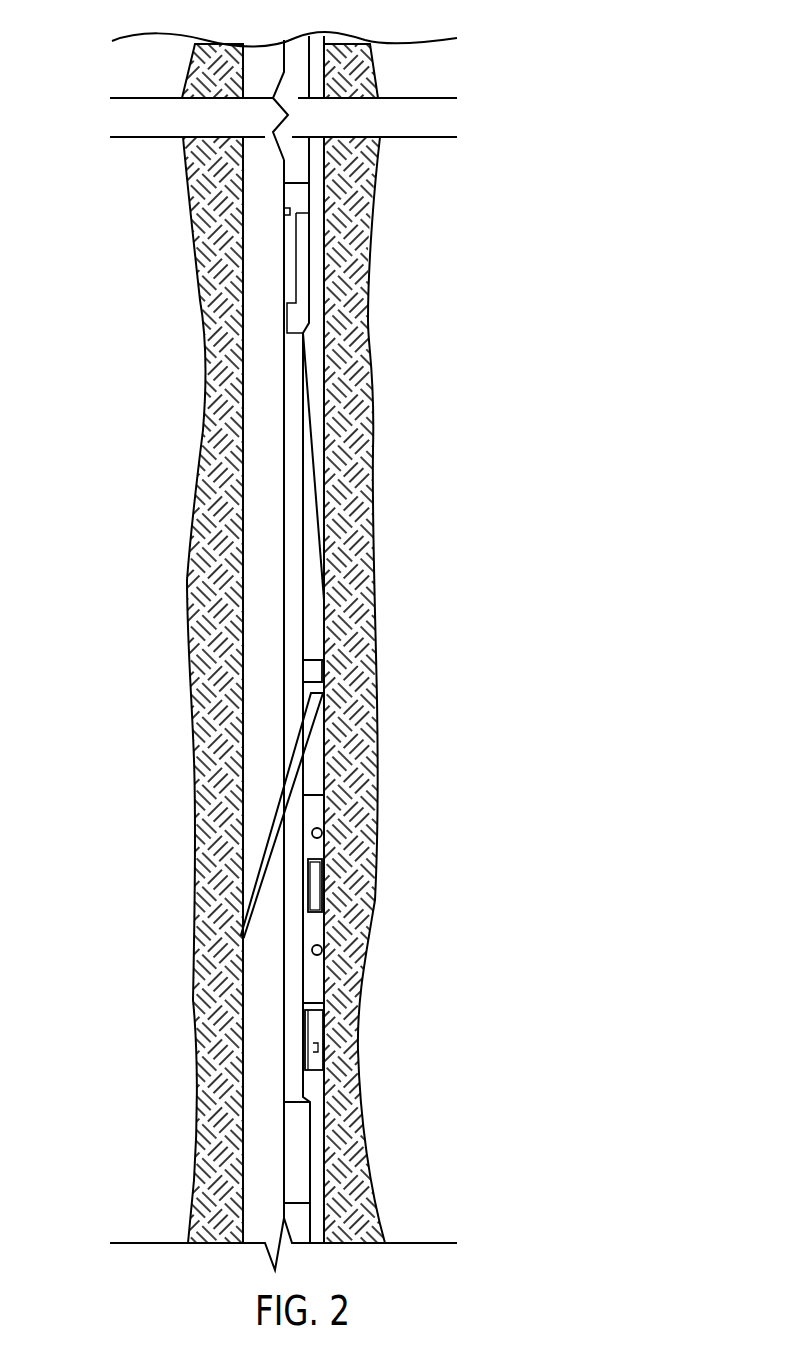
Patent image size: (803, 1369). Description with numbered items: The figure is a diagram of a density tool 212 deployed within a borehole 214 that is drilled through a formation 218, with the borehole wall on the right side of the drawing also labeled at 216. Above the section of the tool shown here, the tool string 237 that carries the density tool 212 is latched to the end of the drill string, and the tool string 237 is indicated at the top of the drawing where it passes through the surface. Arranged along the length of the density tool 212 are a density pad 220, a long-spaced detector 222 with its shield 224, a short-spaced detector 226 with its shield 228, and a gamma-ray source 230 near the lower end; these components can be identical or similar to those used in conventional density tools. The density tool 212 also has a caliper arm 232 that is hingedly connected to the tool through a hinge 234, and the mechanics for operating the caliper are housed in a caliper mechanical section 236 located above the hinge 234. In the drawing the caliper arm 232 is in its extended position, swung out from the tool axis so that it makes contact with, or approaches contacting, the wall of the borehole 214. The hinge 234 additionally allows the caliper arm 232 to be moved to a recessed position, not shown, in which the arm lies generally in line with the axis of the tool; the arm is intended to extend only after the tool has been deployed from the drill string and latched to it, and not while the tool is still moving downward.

The tool string 237 is at (297, 43).
The wellbore wall 216 is at (342, 202).
The formation 218 is at (347, 303).
The borehole 214 is at (263, 278).
The density tool 212 is at (293, 646).
The caliper mechanical section 236 is at (310, 590).
The hinge 234 is at (312, 683).
The density pad 220 is at (313, 753).
The caliper arm 232 is at (277, 828).
The long-spaced detector 222 is at (322, 830).
The shield 224 is at (305, 852).
The short-spaced detector 226 is at (322, 947).
The shield 228 is at (313, 980).
The gamma-ray source 230 is at (313, 1008).